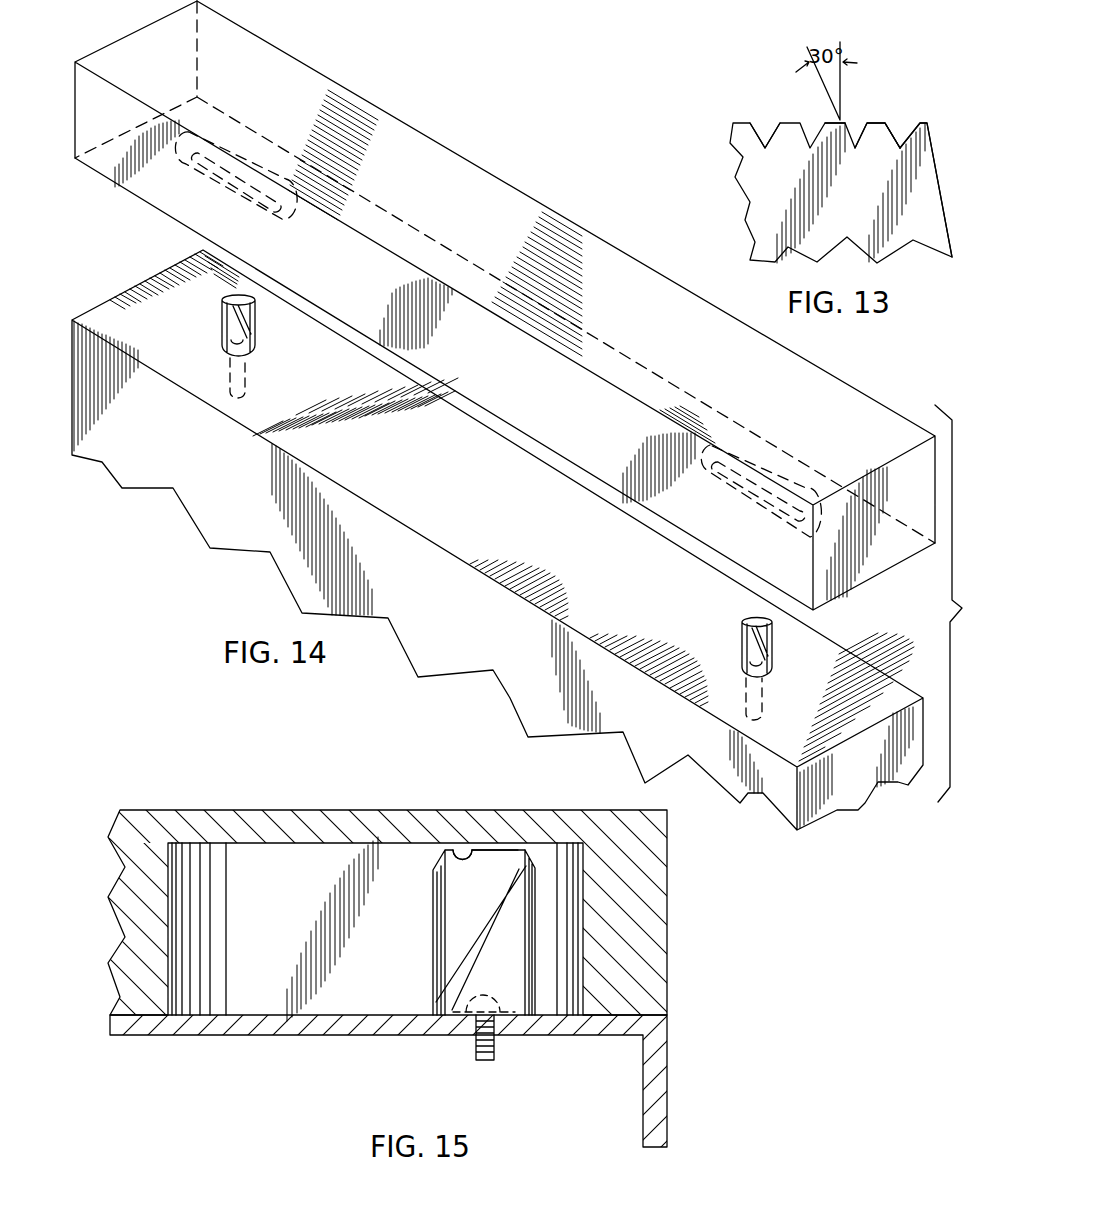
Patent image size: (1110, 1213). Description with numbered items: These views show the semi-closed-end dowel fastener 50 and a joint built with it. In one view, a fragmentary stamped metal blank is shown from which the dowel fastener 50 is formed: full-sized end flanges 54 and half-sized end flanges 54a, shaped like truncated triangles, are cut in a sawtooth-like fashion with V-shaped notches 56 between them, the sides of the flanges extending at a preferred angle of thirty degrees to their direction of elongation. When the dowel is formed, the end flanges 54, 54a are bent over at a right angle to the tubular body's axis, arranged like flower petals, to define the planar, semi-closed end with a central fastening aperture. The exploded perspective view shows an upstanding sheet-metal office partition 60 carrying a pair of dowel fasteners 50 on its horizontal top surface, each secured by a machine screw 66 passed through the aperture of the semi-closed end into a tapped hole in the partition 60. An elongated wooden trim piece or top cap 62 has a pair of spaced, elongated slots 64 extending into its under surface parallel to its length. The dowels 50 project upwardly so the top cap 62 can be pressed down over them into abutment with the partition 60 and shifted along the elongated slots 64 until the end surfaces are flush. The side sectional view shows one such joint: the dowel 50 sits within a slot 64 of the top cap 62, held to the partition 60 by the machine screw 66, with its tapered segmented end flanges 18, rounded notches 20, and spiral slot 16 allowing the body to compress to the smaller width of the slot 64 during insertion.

In FIG. 15, the slot 16 is at (474, 968).
In FIG. 15, the segmented end flanges 18 is at (500, 855).
In FIG. 15, the rounded notches 20 is at (466, 852).
In FIG. 14, the dowel fastener 50 is at (262, 348).
In FIG. 15, the dowel fastener 50 is at (426, 921).
In FIG. 13, the end flanges 54 is at (793, 142).
In FIG. 13, the half-sized end flanges 54a is at (920, 130).
In FIG. 13, the V-shaped notches 56 is at (848, 127).
In FIG. 15, the office partition 60 is at (659, 1091).
In FIG. 14, the trim piece or top cap 62 is at (617, 306).
In FIG. 15, the trim piece or top cap 62 is at (250, 821).
In FIG. 14, the elongated slots 64 is at (237, 208).
In FIG. 15, the elongated slots 64 is at (292, 845).
In FIG. 14, the machine screw 66 is at (227, 375).
In FIG. 15, the machine screw 66 is at (477, 1050).